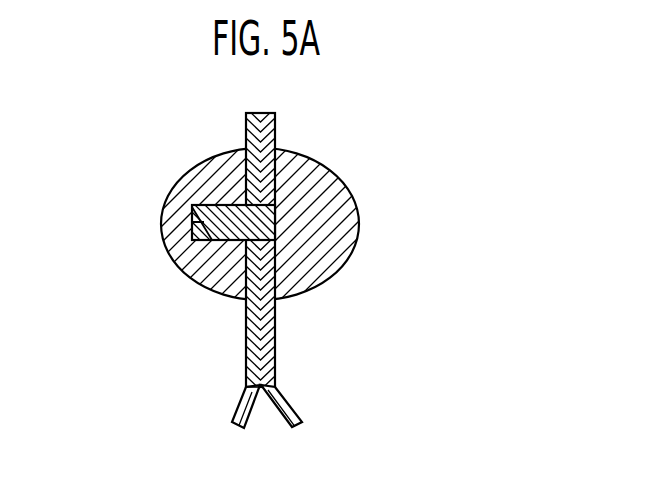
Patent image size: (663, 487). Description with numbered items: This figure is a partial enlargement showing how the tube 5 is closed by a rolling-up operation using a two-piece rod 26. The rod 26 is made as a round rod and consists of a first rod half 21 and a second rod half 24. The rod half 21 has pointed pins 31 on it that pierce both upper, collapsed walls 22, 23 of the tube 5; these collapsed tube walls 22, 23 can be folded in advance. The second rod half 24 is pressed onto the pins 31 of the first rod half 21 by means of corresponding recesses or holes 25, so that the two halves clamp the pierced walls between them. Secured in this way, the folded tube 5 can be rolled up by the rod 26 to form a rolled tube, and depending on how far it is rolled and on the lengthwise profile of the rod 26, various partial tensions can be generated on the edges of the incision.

The tube 5 is at (368, 406).
The rod half 21 is at (323, 198).
The collapsed tube wall 22 is at (248, 390).
The collapsed tube wall 23 is at (283, 392).
The second rod half 24 is at (188, 173).
The recesses or holes 25 is at (215, 243).
The two-piece rod 26 is at (384, 247).
The pointed pins 31 is at (200, 211).